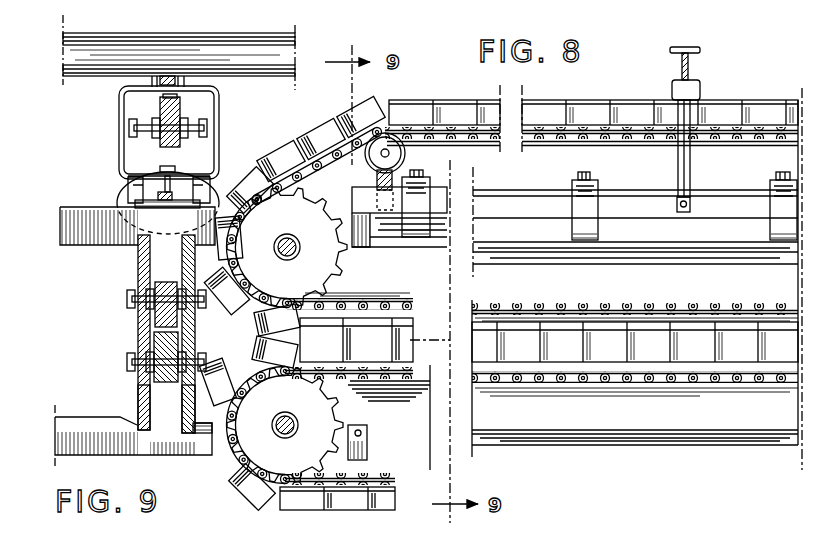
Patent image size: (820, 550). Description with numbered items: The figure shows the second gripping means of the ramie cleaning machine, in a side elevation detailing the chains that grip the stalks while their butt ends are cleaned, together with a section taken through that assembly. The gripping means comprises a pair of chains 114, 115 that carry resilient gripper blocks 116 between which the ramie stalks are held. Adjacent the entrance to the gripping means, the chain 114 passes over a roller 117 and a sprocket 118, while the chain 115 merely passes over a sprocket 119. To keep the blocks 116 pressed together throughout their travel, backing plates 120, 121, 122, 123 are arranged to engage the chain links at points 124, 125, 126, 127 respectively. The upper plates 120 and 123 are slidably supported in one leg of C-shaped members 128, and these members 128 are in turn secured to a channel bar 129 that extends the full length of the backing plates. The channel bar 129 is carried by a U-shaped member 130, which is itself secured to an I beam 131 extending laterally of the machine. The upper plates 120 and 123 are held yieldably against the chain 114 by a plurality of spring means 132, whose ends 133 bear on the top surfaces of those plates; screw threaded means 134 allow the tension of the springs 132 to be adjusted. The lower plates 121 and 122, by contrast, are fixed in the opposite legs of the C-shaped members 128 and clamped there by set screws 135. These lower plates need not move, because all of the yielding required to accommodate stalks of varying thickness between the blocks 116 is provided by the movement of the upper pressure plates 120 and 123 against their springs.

In FIG. 9, the chain 114 is at (198, 128).
In FIG. 9, the chain 115 is at (128, 362).
In FIG. 8, the chain 115 is at (396, 480).
In FIG. 9, the resilient gripper block 116 is at (180, 106).
In FIG. 8, the roller 117 is at (403, 150).
In FIG. 8, the sprocket 118 is at (328, 212).
In FIG. 8, the sprocket 119 is at (327, 413).
In FIG. 9, the backing plate 120 is at (184, 270).
In FIG. 8, the backing plate 120 is at (662, 250).
In FIG. 9, the backing plate 121 is at (184, 392).
In FIG. 8, the backing plate 121 is at (657, 428).
In FIG. 9, the backing plate 122 is at (138, 393).
In FIG. 9, the backing plate 123 is at (138, 266).
In FIG. 9, the chain link engagement point 124 is at (186, 306).
In FIG. 9, the chain link engagement point 125 is at (190, 360).
In FIG. 9, the chain link engagement point 126 is at (144, 352).
In FIG. 9, the chain link engagement point 127 is at (142, 312).
In FIG. 9, the C-shaped member 128 is at (65, 243).
In FIG. 8, the C-shaped member 128 is at (367, 246).
In FIG. 9, the channel bar 129 is at (130, 205).
In FIG. 8, the channel bar 129 is at (727, 214).
In FIG. 9, the U-shaped member 130 is at (120, 98).
In FIG. 8, the U-shaped member 130 is at (690, 167).
In FIG. 9, the I beam 131 is at (230, 47).
In FIG. 8, the I beam 131 is at (690, 65).
In FIG. 9, the spring means 132 is at (128, 174).
In FIG. 8, the spring means 132 is at (423, 238).
In FIG. 9, the spring end 133 is at (125, 232).
In FIG. 9, the screw threaded means 134 is at (165, 170).
In FIG. 8, the screw threaded means 134 is at (424, 176).
In FIG. 9, the set screw 135 is at (201, 450).
In FIG. 8, the set screw 135 is at (367, 441).